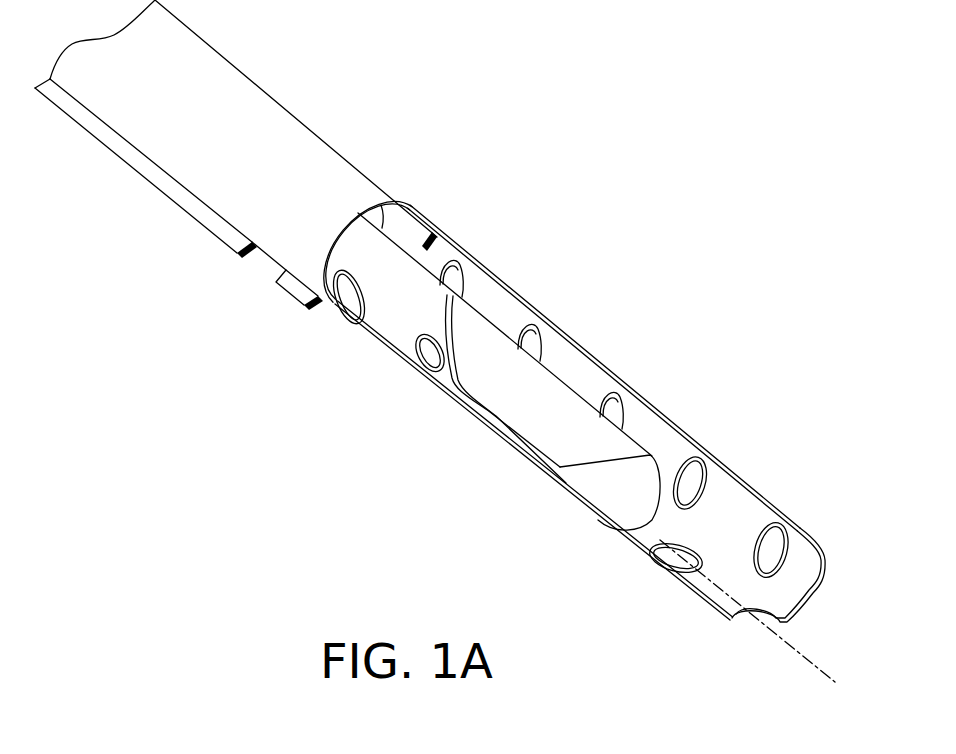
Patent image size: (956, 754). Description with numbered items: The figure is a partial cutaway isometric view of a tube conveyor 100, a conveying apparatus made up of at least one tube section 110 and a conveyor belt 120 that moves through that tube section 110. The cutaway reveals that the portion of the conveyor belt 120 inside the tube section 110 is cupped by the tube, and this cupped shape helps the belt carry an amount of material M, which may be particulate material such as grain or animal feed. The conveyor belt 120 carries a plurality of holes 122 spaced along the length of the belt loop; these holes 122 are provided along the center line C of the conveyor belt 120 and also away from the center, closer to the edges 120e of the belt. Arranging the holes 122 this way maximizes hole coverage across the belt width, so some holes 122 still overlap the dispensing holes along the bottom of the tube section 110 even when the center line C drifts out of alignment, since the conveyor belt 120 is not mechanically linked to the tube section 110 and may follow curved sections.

The tube conveyor 100 is at (636, 148).
The tube section 110 is at (247, 72).
The conveyor belt 120 is at (554, 400).
The edges of the conveyor belt 120e is at (442, 237).
The holes 122 is at (675, 472).
The material M is at (537, 408).
The center line C is at (787, 643).